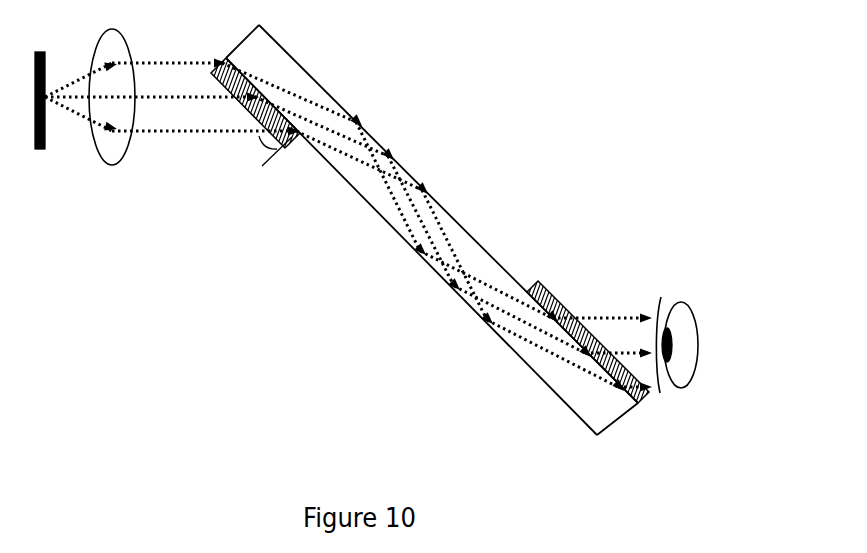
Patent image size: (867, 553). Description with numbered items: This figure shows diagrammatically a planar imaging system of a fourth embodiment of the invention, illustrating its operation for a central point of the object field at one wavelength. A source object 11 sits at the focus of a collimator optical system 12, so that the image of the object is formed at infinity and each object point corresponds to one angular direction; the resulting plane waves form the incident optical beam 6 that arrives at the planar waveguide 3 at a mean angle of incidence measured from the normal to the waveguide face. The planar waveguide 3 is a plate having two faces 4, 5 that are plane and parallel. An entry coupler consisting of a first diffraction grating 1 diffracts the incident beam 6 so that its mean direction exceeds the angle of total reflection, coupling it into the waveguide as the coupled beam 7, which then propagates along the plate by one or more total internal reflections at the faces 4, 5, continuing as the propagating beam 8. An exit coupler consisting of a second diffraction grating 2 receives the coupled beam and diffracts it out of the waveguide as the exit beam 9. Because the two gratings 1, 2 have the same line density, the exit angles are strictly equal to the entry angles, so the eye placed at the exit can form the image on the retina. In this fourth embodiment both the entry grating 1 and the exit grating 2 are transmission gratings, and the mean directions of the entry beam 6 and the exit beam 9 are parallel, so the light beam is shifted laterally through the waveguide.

The first diffraction grating 1 is at (212, 65).
The second diffraction grating 2 is at (588, 321).
The planar waveguide 3 is at (243, 35).
The face of the waveguide 4 is at (350, 183).
The face of the waveguide 5 is at (443, 207).
The incident optical beam 6 is at (198, 65).
The coupled beam 7 is at (347, 158).
The propagating beam 8 is at (523, 342).
The exit beam 9 is at (650, 388).
The source object 11 is at (40, 152).
The collimator optical system 12 is at (112, 165).